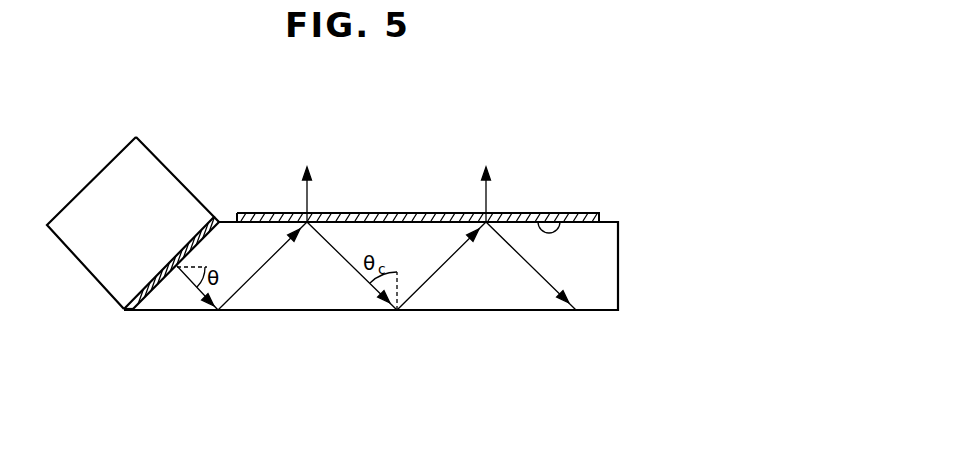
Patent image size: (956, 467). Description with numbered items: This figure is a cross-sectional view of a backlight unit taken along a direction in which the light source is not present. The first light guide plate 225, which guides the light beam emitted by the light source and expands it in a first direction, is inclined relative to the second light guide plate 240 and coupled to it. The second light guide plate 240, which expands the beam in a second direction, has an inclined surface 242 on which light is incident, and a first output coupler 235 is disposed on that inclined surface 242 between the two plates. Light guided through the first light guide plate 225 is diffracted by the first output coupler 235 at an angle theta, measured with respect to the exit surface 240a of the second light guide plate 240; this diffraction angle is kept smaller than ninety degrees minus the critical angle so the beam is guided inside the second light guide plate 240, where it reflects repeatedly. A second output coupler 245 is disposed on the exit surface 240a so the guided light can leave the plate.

The first light guide plate 225 is at (95, 250).
The first output coupler 235 is at (125, 306).
The inclined surface 242 is at (158, 284).
The second light guide plate 240 is at (608, 277).
The exit surface 240a is at (559, 222).
The second output coupler 245 is at (600, 217).